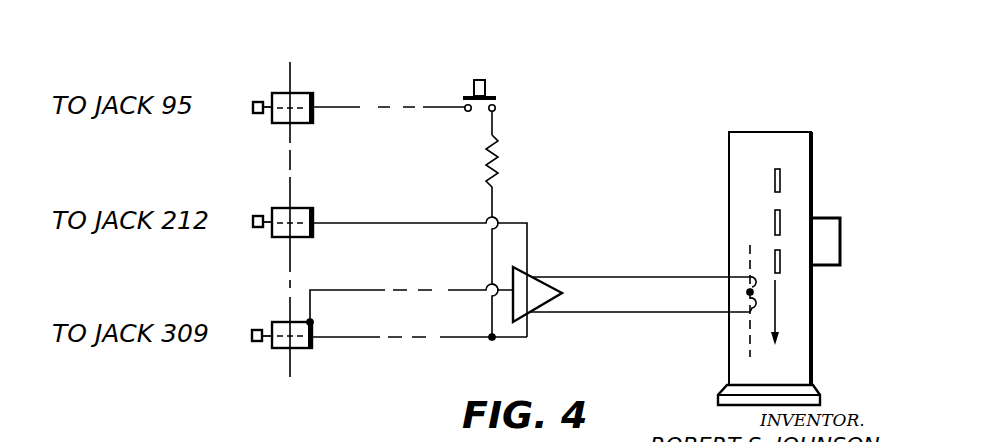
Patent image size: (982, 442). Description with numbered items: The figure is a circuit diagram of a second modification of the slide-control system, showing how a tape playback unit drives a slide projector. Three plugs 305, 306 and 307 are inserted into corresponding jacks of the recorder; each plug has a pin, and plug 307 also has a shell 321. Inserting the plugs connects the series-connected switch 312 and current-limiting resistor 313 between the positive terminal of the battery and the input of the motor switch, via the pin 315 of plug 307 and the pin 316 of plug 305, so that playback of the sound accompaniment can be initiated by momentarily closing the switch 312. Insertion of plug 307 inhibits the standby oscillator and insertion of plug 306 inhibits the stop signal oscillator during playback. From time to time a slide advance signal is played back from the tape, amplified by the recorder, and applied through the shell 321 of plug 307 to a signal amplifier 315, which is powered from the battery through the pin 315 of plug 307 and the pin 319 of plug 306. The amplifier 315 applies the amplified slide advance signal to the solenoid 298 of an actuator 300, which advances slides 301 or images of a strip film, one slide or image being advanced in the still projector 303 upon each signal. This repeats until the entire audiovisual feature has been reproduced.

The plug 305 is at (367, 99).
The plug 306 is at (368, 213).
The plug 307 is at (367, 377).
The switch 312 is at (487, 92).
The current-limiting resistor 313 is at (497, 163).
The signal amplifier 315 is at (528, 276).
The pin 316 is at (252, 116).
The pin 319 is at (255, 230).
The shell 321 is at (244, 388).
The actuator 300 is at (764, 231).
The slides 301 is at (783, 211).
The still projector 303 is at (792, 322).
The solenoid 298 is at (743, 306).